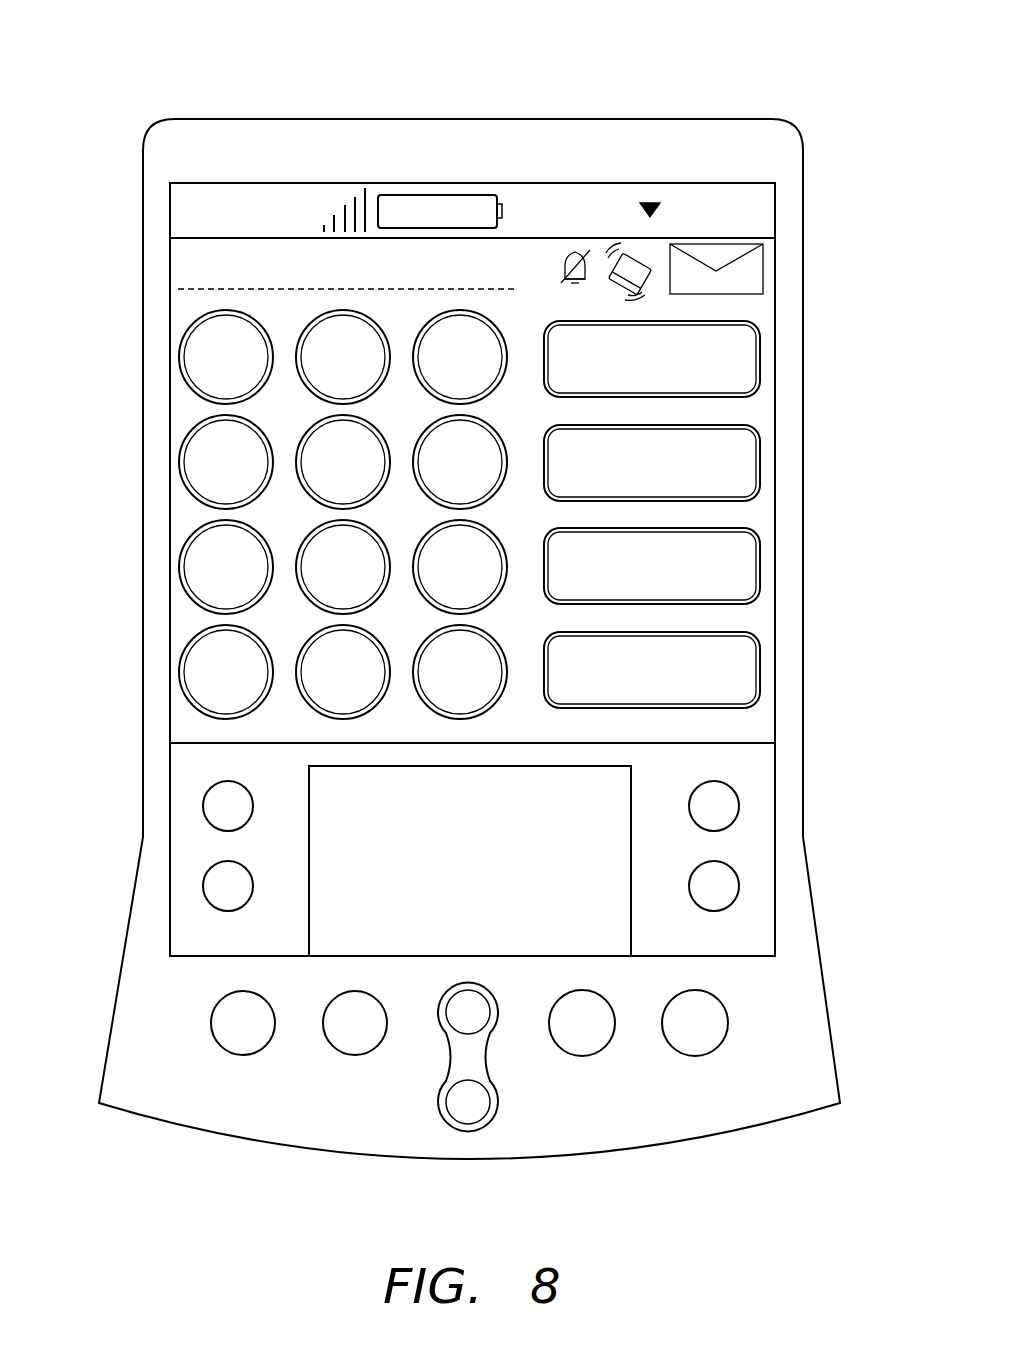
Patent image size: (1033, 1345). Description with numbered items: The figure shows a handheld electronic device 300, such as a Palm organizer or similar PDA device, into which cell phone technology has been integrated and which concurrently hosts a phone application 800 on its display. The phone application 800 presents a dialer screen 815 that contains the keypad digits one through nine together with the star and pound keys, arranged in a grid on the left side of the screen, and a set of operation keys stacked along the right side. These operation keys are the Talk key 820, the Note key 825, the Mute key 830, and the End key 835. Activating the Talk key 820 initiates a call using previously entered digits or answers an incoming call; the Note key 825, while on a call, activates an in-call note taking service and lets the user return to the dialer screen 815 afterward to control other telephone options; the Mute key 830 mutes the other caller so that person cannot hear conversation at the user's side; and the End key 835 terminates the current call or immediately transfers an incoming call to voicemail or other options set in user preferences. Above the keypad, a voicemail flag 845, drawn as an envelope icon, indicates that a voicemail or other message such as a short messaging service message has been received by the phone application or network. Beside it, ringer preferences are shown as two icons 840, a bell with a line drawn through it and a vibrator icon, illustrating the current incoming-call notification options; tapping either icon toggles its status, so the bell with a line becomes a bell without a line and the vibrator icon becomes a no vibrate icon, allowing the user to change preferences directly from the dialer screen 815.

The PDA device 300 is at (675, 58).
The phone application 800 is at (435, 167).
The dialer screen 815 is at (187, 415).
The Talk key 820 is at (760, 359).
The Note key 825 is at (760, 464).
The Mute key 830 is at (760, 567).
The End key 835 is at (760, 671).
The ringer preference icons 840 is at (597, 247).
The voicemail flag 845 is at (763, 268).